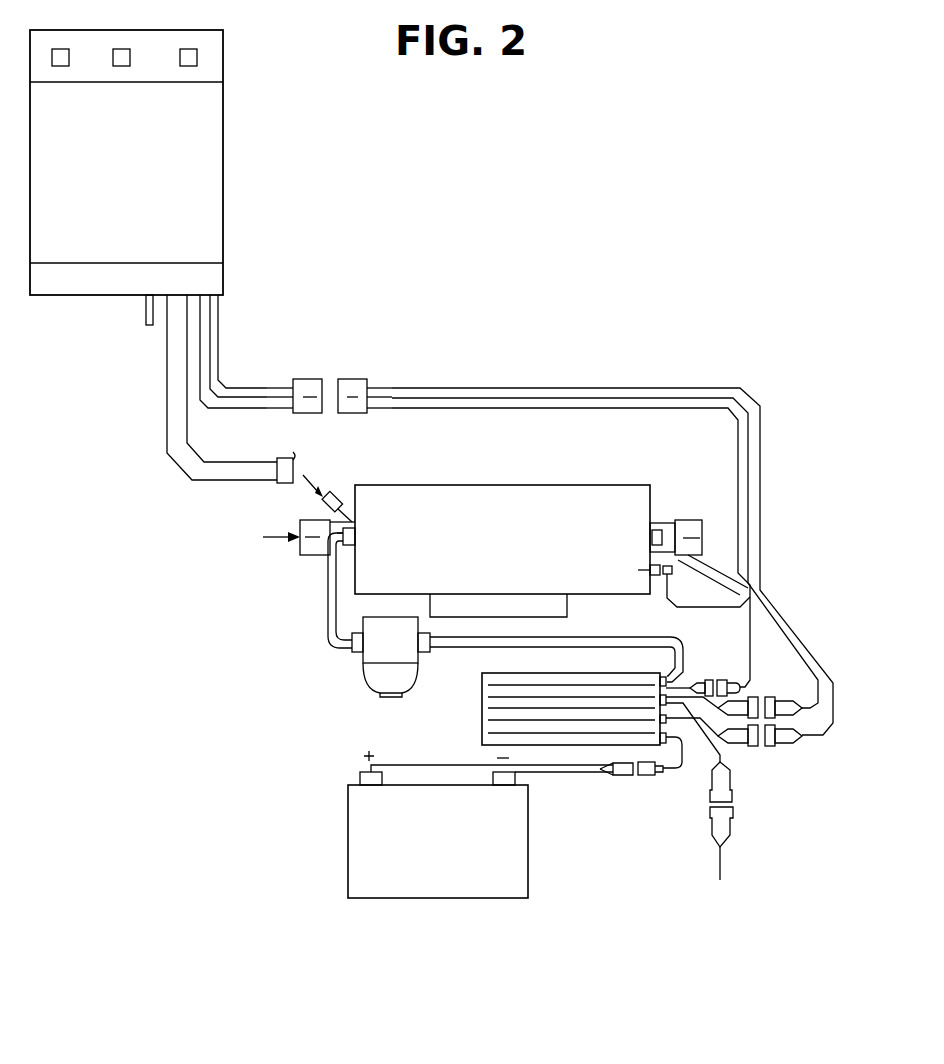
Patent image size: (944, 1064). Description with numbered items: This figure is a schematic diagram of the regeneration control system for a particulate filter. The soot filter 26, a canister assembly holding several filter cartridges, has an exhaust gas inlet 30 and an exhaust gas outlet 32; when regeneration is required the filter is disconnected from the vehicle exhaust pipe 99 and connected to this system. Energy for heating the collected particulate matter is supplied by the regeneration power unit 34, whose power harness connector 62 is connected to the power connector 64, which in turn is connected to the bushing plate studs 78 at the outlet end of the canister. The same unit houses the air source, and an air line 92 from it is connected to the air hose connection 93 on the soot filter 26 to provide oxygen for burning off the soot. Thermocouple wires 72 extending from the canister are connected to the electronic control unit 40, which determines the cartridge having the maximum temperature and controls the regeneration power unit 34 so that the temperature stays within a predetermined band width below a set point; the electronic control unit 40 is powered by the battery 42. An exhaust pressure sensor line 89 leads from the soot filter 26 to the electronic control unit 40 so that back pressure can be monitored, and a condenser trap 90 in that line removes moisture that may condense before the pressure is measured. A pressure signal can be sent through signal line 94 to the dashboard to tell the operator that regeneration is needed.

The particulate filter 26 is at (550, 485).
The exhaust gas inlet 30 is at (300, 557).
The exhaust gas outlet 32 is at (699, 520).
The regeneration power unit 34 is at (223, 187).
The electronic control unit 40 is at (482, 720).
The battery 42 is at (528, 853).
The power harness connector 62 is at (308, 378).
The power connector 64 is at (362, 378).
The thermocouple wires 72 is at (773, 622).
The bushing plate studs 78 is at (670, 577).
The exhaust pressure sensor line 89 is at (325, 620).
The condenser trap 90 is at (392, 697).
The air line 92 is at (185, 470).
The air hose connection 93 is at (332, 490).
The signal line 94 is at (722, 857).
The vehicle exhaust pipe 99 is at (283, 530).